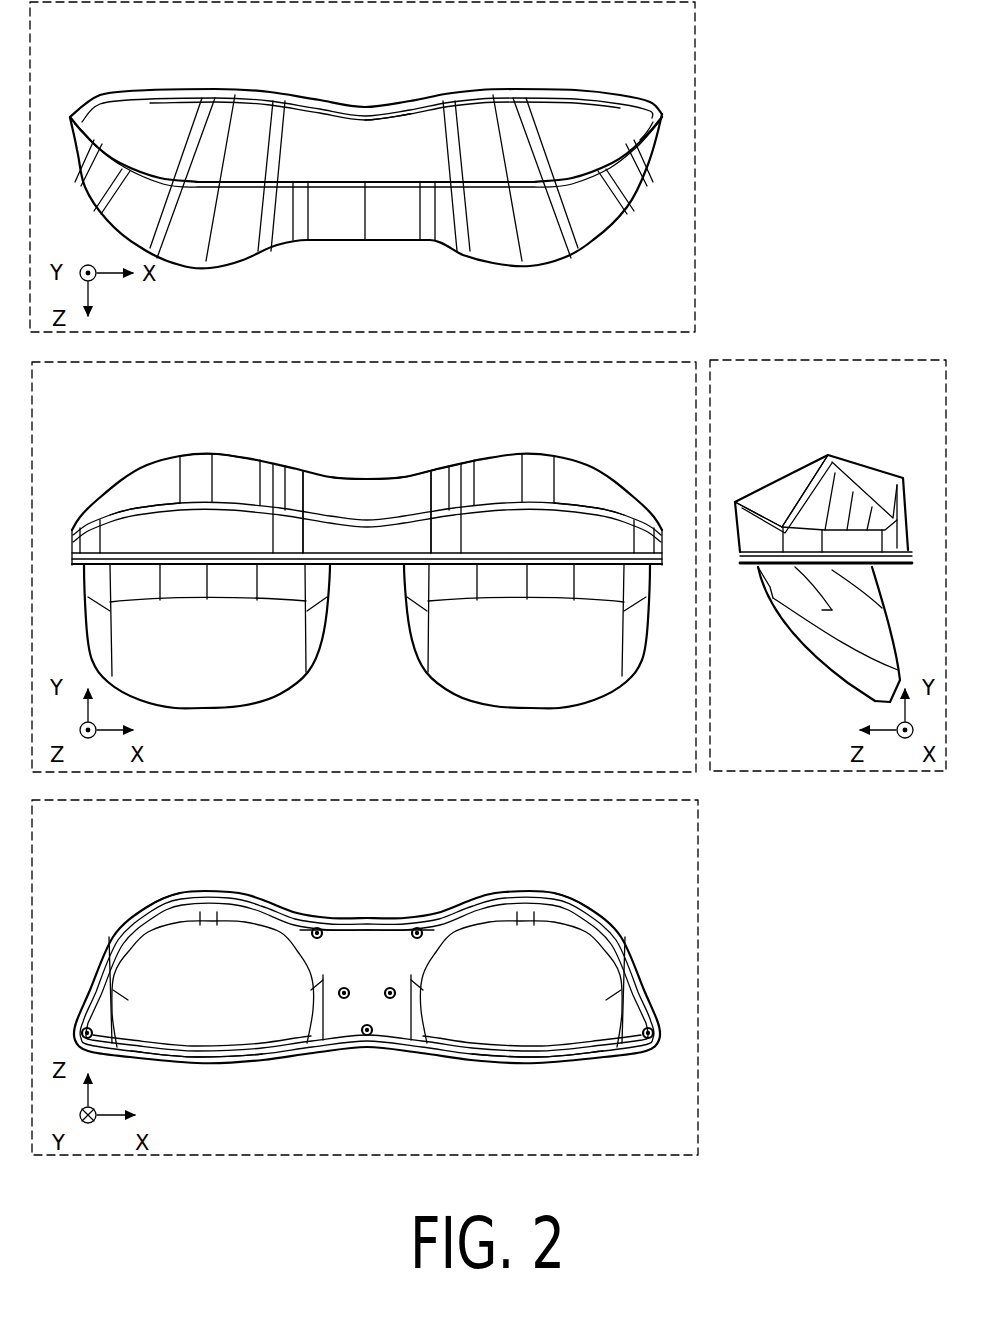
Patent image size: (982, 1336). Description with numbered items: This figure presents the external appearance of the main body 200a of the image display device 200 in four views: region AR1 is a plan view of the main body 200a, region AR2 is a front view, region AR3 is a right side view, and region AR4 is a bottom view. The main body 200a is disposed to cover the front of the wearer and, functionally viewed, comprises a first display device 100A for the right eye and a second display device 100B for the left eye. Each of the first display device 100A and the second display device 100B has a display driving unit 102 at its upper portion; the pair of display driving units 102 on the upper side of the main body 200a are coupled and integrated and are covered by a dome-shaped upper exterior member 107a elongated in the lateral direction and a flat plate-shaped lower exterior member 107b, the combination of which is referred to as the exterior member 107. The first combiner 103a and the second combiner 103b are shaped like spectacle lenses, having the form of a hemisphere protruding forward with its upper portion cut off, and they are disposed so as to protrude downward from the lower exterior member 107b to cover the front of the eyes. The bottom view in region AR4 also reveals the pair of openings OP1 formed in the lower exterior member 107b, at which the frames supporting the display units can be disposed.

The first display device 100A is at (181, 449).
The second display device 100B is at (188, 88).
The image display device 200 is at (366, 536).
The main body 200a is at (354, 96).
The exterior member 107 is at (369, 253).
The upper exterior member 107a is at (398, 130).
The lower exterior member 107b is at (373, 567).
The display driving unit 102 is at (146, 478).
The first combiner 103a is at (190, 680).
The second combiner 103b is at (520, 680).
The opening OP1 is at (195, 1052).
The region (plan view) AR1 is at (699, 76).
The region (front view) AR2 is at (699, 359).
The region (right side view) AR3 is at (849, 359).
The region (bottom view) AR4 is at (699, 873).